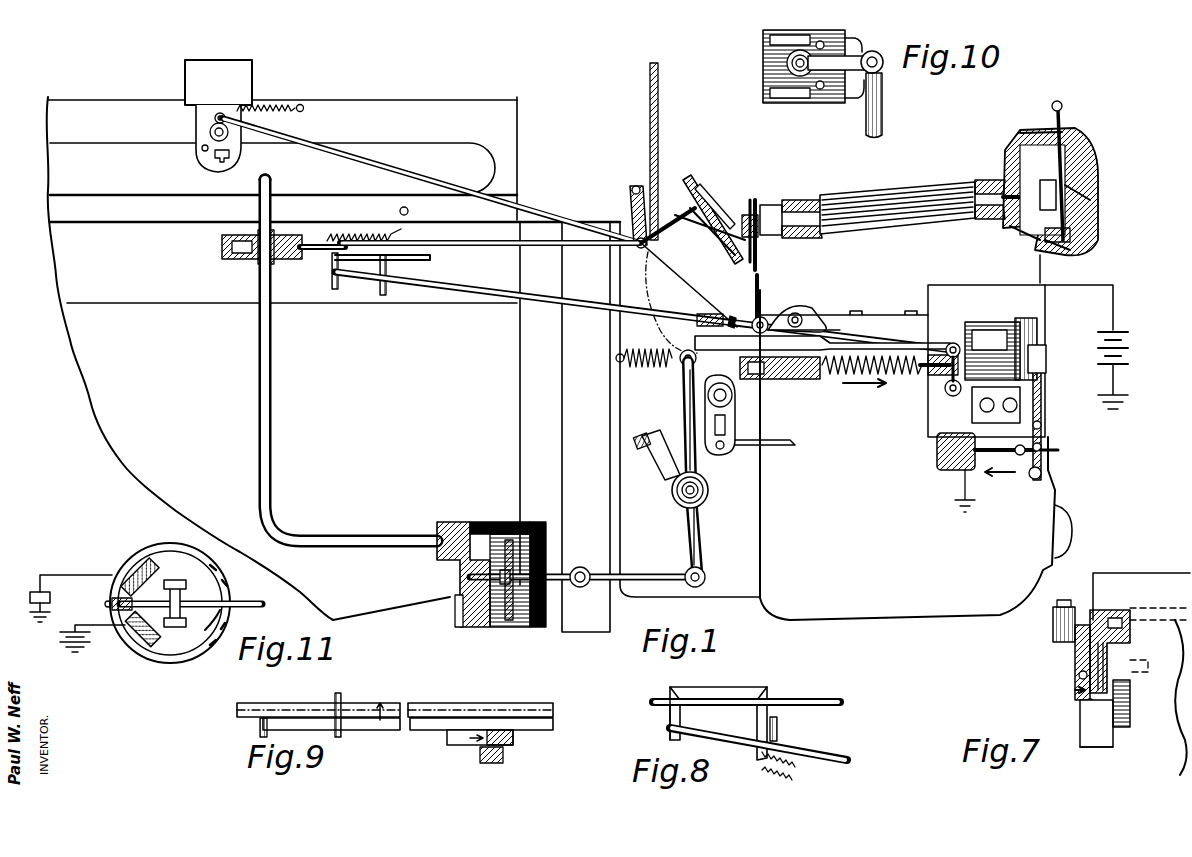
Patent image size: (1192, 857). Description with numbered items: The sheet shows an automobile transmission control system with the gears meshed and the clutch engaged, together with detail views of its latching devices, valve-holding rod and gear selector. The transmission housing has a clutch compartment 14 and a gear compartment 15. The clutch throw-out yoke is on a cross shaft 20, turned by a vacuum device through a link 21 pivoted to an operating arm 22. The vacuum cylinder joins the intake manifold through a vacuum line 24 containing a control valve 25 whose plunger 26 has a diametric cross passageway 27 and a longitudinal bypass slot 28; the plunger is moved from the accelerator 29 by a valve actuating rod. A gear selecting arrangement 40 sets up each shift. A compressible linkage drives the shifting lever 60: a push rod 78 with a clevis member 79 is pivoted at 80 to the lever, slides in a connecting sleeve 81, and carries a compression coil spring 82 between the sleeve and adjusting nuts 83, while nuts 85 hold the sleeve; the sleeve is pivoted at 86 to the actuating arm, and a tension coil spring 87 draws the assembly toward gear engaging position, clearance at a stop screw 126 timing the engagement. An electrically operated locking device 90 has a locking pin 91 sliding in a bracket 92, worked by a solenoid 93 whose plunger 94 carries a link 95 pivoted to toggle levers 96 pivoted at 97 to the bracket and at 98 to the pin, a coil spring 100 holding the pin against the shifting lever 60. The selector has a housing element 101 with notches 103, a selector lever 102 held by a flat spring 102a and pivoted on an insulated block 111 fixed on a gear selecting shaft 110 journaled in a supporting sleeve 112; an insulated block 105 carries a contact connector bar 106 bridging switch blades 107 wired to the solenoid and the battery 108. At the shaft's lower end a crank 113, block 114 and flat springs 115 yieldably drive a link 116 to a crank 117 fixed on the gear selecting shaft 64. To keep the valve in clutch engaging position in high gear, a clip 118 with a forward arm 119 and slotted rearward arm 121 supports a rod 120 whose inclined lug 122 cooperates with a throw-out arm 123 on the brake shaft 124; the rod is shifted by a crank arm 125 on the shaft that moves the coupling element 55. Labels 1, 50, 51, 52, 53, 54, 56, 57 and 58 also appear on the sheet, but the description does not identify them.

In FIG. 11, the shaft 1 is at (200, 606).
In FIG. 1, the clutch compartment 14 is at (604, 615).
In FIG. 1, the gear compartment 15 is at (885, 620).
In FIG. 1, the cross shaft 20 is at (706, 488).
In FIG. 1, the link 21 is at (640, 575).
In FIG. 1, the operating arm 22 is at (700, 538).
In FIG. 1, the vacuum line 24 is at (274, 358).
In FIG. 1, the control valve 25 is at (402, 150).
In FIG. 1, the plunger 26 is at (284, 237).
In FIG. 1, the diametric cross passageway 27 is at (250, 236).
In FIG. 1, the longitudinal bypass slot 28 is at (298, 262).
In FIG. 1, the accelerator 29 is at (690, 185).
In FIG. 1, the gear selecting arrangement 40 is at (1092, 222).
In FIG. 11, the gear selecting arrangement 40 is at (178, 545).
In FIG. 1, the rod 50 is at (476, 250).
In FIG. 8, the rod 50 is at (800, 700).
In FIG. 1, the cylinder housing 51 is at (482, 520).
In FIG. 1, the spring 52 is at (345, 220).
In FIG. 1, the link 53 is at (628, 200).
In FIG. 1, the rod 54 is at (578, 210).
In FIG. 1, the coupling element 55 is at (240, 92).
In FIG. 1, the spring 56 is at (280, 104).
In FIG. 1, the rod 57 is at (836, 377).
In FIG. 1, the arm 58 is at (682, 410).
In FIG. 1, the shifting lever 60 is at (998, 322).
In FIG. 7, the shifting lever 60 is at (1113, 614).
In FIG. 1, the gear selecting shaft 64 is at (806, 300).
In FIG. 1, the push rod 78 is at (900, 375).
In FIG. 1, the clevis member 79 is at (965, 345).
In FIG. 1, the pivot 80 is at (1024, 320).
In FIG. 1, the connecting sleeve 81 is at (790, 375).
In FIG. 1, the compression coil spring 82 is at (850, 375).
In FIG. 1, the adjusting nuts 83 is at (930, 380).
In FIG. 1, the nuts 85 is at (782, 372).
In FIG. 1, the pivotal connection 86 is at (680, 352).
In FIG. 1, the tension coil spring 87 is at (668, 370).
In FIG. 1, the locking device 90 is at (1043, 445).
In FIG. 7, the locking device 90 is at (1075, 690).
In FIG. 1, the locking pin 91 is at (1043, 375).
In FIG. 7, the locking pin 91 is at (1078, 615).
In FIG. 1, the bracket 92 is at (1048, 378).
In FIG. 7, the bracket 92 is at (1075, 655).
In FIG. 1, the solenoid 93 is at (950, 462).
In FIG. 11, the solenoid 93 is at (50, 594).
In FIG. 7, the solenoid 93 is at (1082, 720).
In FIG. 1, the solenoid plunger 94 is at (948, 432).
In FIG. 1, the link 95 is at (1030, 468).
In FIG. 7, the link 95 is at (1085, 705).
In FIG. 1, the toggle levers 96 is at (1050, 450).
In FIG. 7, the toggle levers 96 is at (1130, 702).
In FIG. 1, the pivot 97 is at (1043, 470).
In FIG. 7, the pivot 97 is at (1085, 747).
In FIG. 1, the pivot 98 is at (1043, 424).
In FIG. 7, the pivot 98 is at (1079, 675).
In FIG. 1, the coil spring 100 is at (996, 482).
In FIG. 1, the housing element 101 is at (1085, 178).
In FIG. 11, the housing element 101 is at (128, 568).
In FIG. 1, the selector lever 102 is at (1062, 128).
In FIG. 11, the selector lever 102 is at (180, 605).
In FIG. 1, the flat spring 102a is at (1090, 200).
In FIG. 1, the notches 103 is at (1050, 134).
In FIG. 1, the insulated block 105 is at (1075, 240).
In FIG. 11, the insulated block 105 is at (210, 633).
In FIG. 1, the contact connector bar 106 is at (1060, 250).
In FIG. 11, the contact connector bar 106 is at (104, 606).
In FIG. 1, the switch blades 107 is at (1020, 242).
In FIG. 11, the switch blades 107 is at (146, 629).
In FIG. 1, the battery 108 is at (1115, 312).
In FIG. 11, the battery 108 is at (60, 640).
In FIG. 1, the gear selecting shaft 110 is at (986, 190).
In FIG. 10, the gear selecting shaft 110 is at (787, 68).
In FIG. 1, the insulated block 111 is at (1048, 180).
In FIG. 11, the insulated block 111 is at (185, 580).
In FIG. 1, the supporting sleeve 112 is at (920, 193).
In FIG. 1, the crank 113 is at (748, 212).
In FIG. 10, the crank 113 is at (862, 62).
In FIG. 1, the block 114 is at (790, 203).
In FIG. 10, the block 114 is at (765, 58).
In FIG. 1, the flat springs 115 is at (768, 205).
In FIG. 1, the link 116 is at (752, 265).
In FIG. 10, the link 116 is at (882, 103).
In FIG. 1, the crank 117 is at (765, 310).
In FIG. 1, the clip 118 is at (392, 258).
In FIG. 8, the clip 118 is at (710, 690).
In FIG. 1, the forward arm 119 is at (334, 276).
In FIG. 9, the forward arm 119 is at (260, 722).
In FIG. 8, the forward arm 119 is at (668, 720).
In FIG. 1, the rod 120 is at (445, 298).
In FIG. 9, the rod 120 is at (352, 722).
In FIG. 8, the rod 120 is at (735, 740).
In FIG. 1, the rearward arm 121 is at (383, 300).
In FIG. 9, the rearward arm 121 is at (342, 696).
In FIG. 8, the rearward arm 121 is at (803, 748).
In FIG. 1, the inclined lug 122 is at (712, 312).
In FIG. 9, the inclined lug 122 is at (478, 730).
In FIG. 1, the throw-out arm 123 is at (744, 316).
In FIG. 1, the brake shaft 124 is at (745, 420).
In FIG. 1, the crank arm 125 is at (940, 325).
In FIG. 1, the stop screw 126 is at (643, 452).